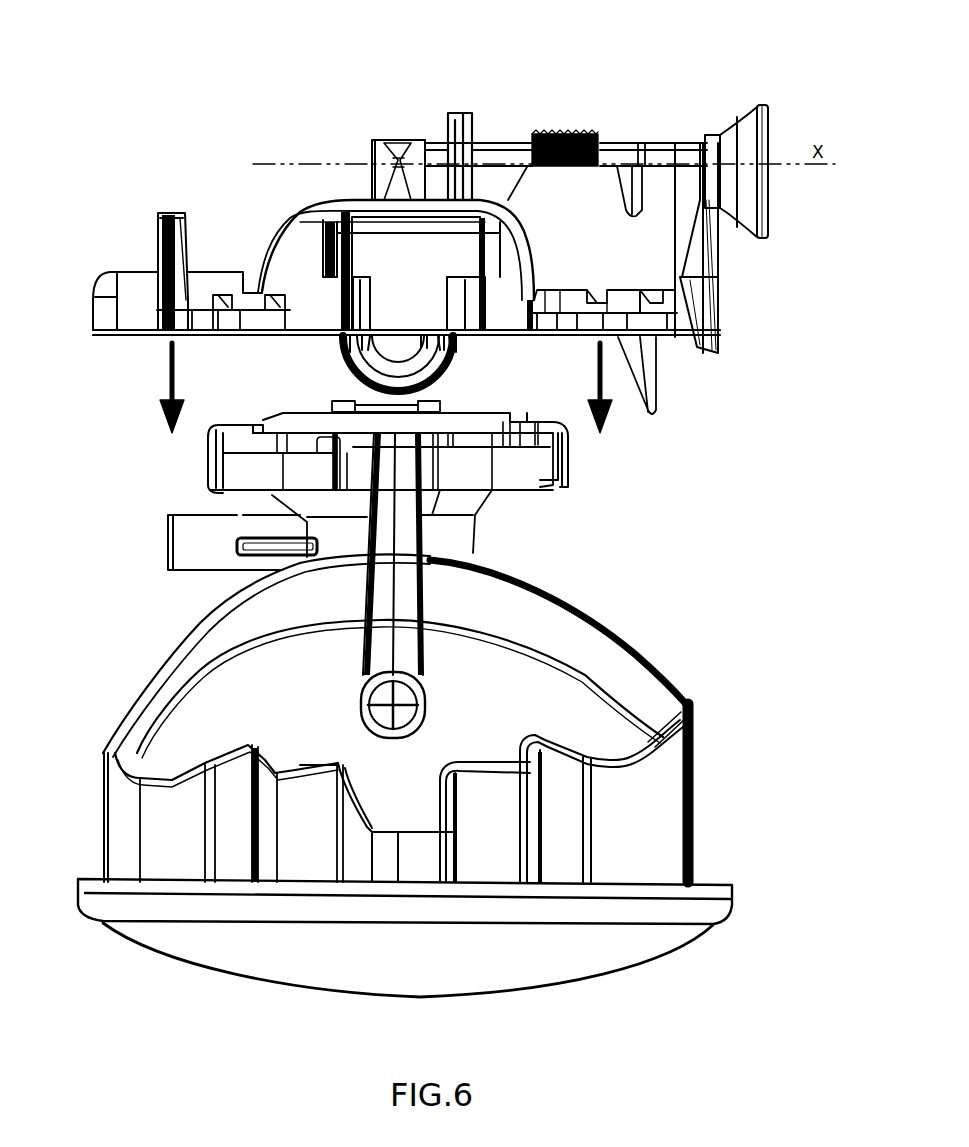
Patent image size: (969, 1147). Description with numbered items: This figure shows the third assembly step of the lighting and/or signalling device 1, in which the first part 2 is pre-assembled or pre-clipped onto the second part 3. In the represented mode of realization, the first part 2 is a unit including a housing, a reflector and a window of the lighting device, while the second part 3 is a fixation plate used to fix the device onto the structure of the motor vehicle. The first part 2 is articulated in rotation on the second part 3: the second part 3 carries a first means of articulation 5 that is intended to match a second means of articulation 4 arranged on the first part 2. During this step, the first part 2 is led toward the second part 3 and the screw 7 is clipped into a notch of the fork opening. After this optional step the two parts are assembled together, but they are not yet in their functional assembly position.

The lighting and/or signalling device 1 is at (113, 493).
The first part 2 is at (695, 800).
The second part 3 is at (95, 297).
The second means of articulation 4 is at (362, 708).
The first means of articulation 5 is at (437, 384).
The screw 7 is at (497, 148).